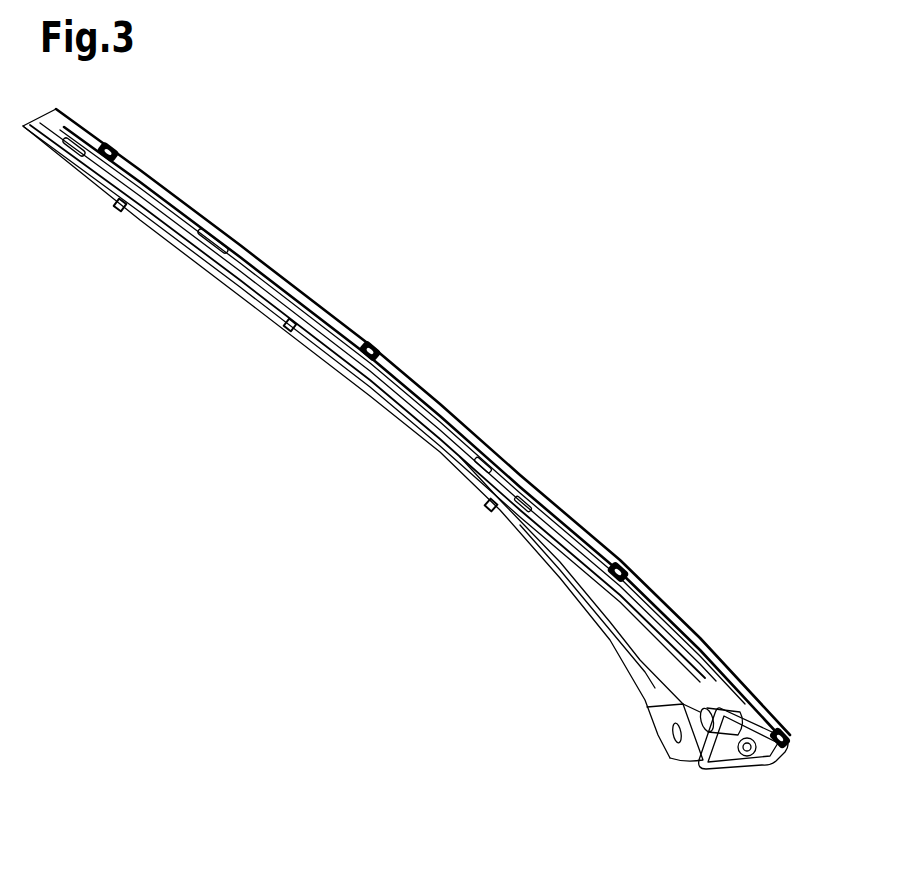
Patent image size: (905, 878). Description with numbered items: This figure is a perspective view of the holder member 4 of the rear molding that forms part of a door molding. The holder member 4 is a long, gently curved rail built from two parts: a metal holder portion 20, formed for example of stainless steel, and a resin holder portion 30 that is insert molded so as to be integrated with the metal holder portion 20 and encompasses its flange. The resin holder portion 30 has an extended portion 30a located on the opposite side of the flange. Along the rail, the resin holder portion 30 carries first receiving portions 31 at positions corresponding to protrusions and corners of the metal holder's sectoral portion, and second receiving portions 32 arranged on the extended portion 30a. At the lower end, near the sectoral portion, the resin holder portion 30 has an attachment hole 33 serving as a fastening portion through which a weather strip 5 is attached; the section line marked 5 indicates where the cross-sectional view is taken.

The holder member 4 is at (478, 404).
The weather strip 5 is at (358, 351).
The metal holder portion 20 is at (639, 674).
The resin holder portion 30 is at (681, 659).
The extended portion 30a is at (568, 580).
The first receiving portions 31 is at (114, 148).
The second receiving portions 32 is at (118, 210).
The attachment hole 33 is at (740, 770).